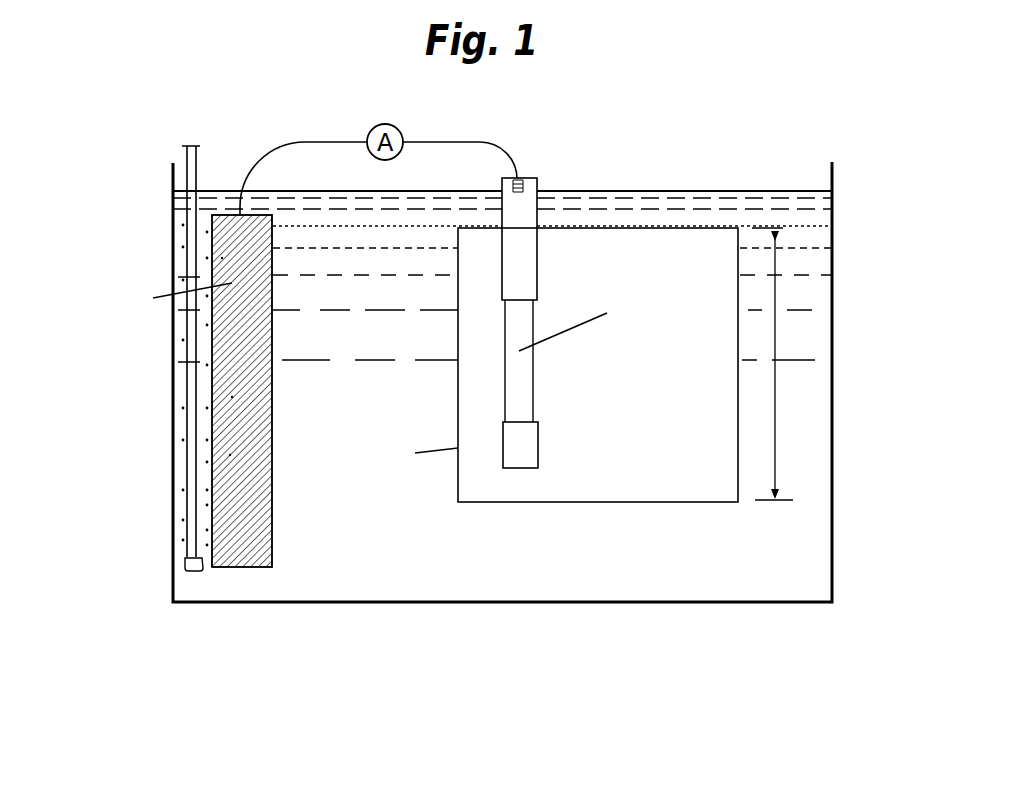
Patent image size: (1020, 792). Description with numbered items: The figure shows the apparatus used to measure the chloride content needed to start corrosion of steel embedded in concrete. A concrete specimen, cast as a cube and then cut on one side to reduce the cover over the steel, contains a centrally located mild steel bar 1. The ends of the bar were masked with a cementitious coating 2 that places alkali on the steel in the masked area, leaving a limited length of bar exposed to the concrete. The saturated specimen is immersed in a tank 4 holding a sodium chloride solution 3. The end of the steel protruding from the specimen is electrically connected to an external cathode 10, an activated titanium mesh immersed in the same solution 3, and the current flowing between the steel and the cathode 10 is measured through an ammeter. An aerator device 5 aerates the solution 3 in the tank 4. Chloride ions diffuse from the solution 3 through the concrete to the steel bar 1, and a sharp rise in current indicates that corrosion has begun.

The mild steel bar 1 is at (522, 393).
The cementitious coating 2 is at (518, 448).
The sodium chloride solution 3 is at (357, 533).
The tank 4 is at (835, 447).
The aerator device 5 is at (190, 478).
The external cathode 10 is at (245, 518).